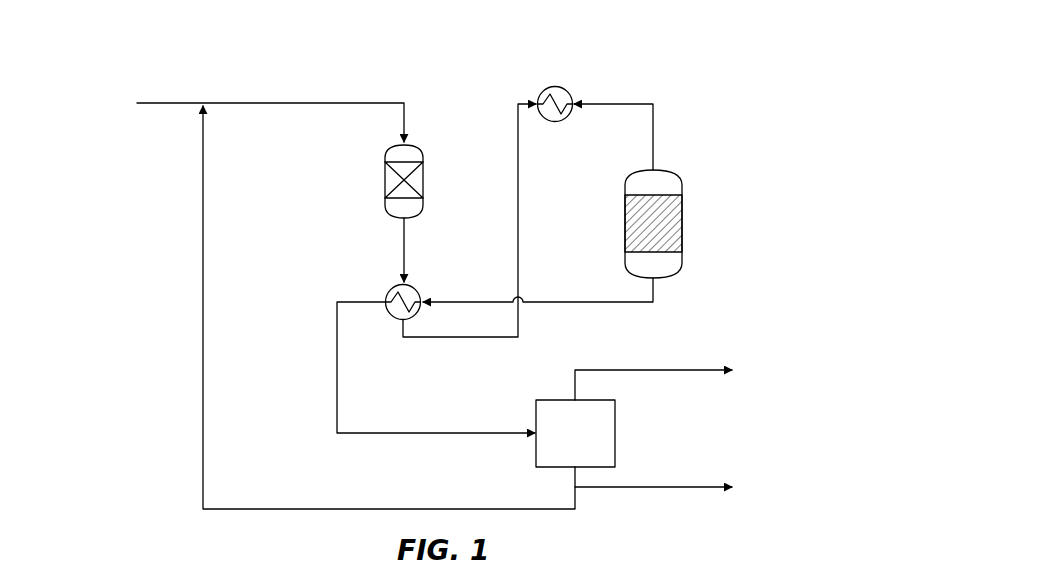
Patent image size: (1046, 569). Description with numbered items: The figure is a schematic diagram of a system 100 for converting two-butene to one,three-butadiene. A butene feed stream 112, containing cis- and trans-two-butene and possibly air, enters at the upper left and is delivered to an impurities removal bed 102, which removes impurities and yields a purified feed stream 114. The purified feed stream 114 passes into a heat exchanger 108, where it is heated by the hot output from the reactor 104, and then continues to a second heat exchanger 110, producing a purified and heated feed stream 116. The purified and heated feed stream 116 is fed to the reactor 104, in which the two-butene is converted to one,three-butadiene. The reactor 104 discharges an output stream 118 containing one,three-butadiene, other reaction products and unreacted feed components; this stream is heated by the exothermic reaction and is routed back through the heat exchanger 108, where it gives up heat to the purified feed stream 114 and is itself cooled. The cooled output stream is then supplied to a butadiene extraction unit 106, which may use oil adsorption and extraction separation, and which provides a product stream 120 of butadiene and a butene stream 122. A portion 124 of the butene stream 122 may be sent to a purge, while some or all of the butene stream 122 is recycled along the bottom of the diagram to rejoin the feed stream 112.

The system 100 is at (707, 46).
The impurities removal bed 102 is at (412, 144).
The reactor 104 is at (670, 172).
The butadiene extraction unit 106 is at (476, 384).
The heat exchanger 108 is at (412, 285).
The second heat exchanger 110 is at (562, 88).
The butene feed stream 112 is at (190, 103).
The purified feed stream 114 is at (404, 245).
The purified and heated feed stream 116 is at (653, 135).
The output stream 118 is at (562, 303).
The product stream 120 is at (655, 370).
The butene stream 122 is at (407, 509).
The portion of the butene stream 124 is at (645, 487).